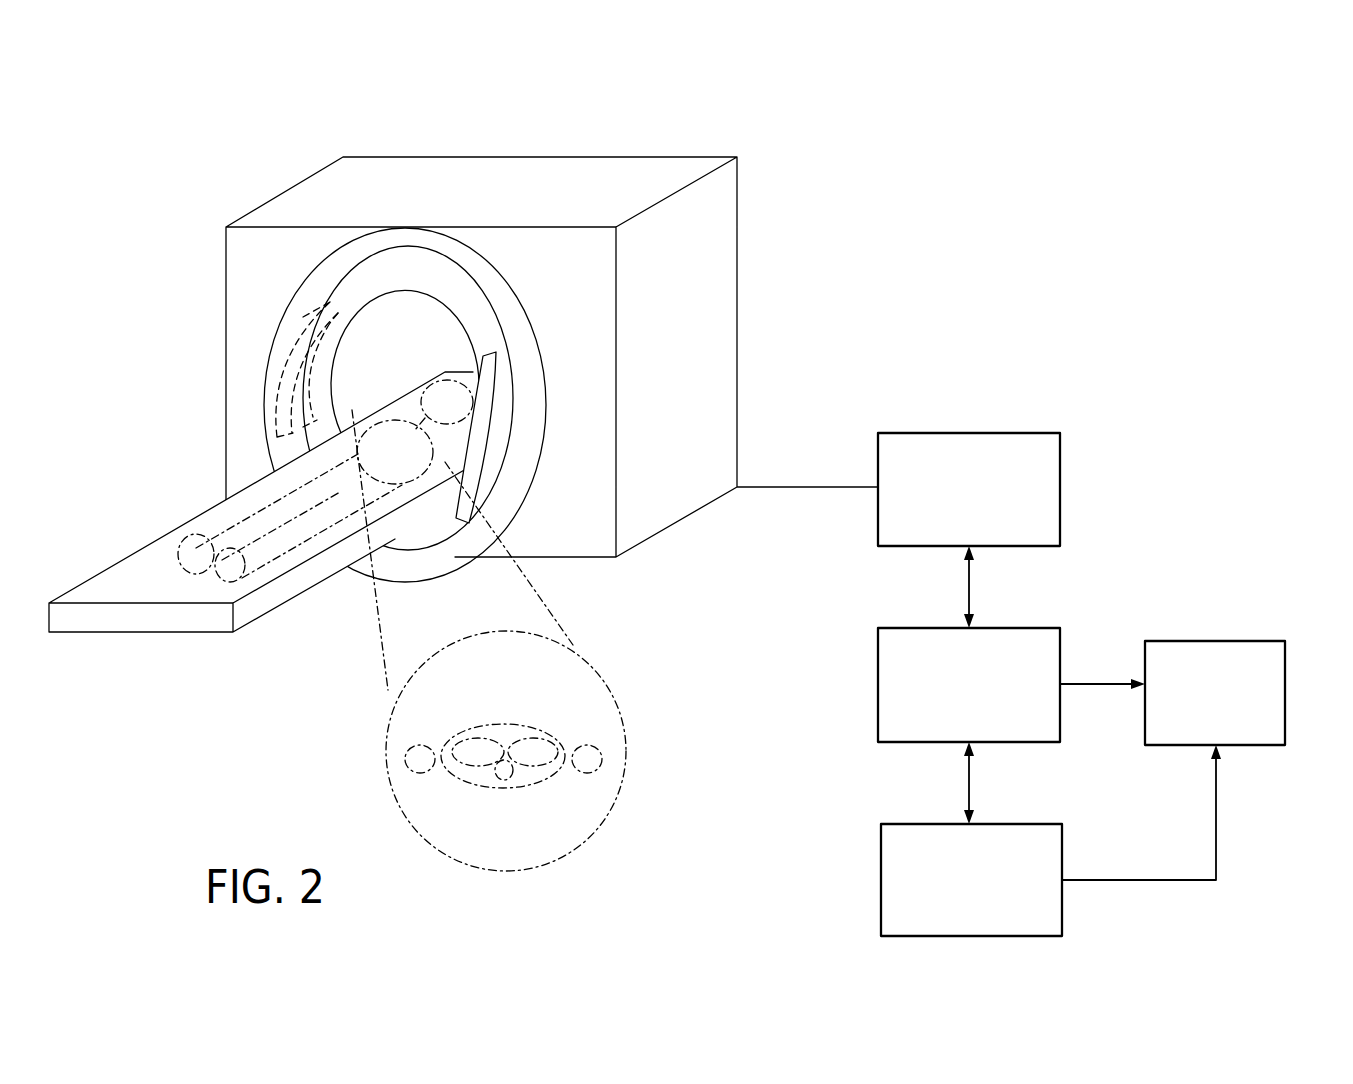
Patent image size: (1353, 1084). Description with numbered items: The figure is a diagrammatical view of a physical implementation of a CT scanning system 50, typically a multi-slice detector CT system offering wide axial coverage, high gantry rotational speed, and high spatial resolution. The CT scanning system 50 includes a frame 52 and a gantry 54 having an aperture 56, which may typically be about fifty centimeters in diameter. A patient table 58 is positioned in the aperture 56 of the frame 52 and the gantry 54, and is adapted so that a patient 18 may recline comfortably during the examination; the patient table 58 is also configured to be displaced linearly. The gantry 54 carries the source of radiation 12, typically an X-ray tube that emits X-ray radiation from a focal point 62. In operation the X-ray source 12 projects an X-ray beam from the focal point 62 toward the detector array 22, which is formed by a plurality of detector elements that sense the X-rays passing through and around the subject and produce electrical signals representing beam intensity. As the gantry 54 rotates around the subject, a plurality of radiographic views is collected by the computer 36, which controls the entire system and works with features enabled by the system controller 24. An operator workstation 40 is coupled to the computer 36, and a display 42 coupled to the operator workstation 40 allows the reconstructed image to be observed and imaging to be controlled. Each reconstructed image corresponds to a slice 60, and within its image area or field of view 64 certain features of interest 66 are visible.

The CT scanning system 50 is at (708, 117).
The frame 52 is at (723, 273).
The gantry 54 is at (380, 260).
The aperture 56 is at (410, 340).
The focal point 62 is at (310, 388).
The source of radiation 12 is at (277, 415).
The detector array 22 is at (497, 423).
The patient 18 is at (223, 527).
The patient table 58 is at (113, 625).
The slice 60 is at (397, 490).
The field of view 64 is at (610, 800).
The features of interest 66 is at (530, 727).
The system controller 24 is at (1060, 470).
The computer 36 is at (878, 658).
The operator workstation 40 is at (881, 863).
The display 42 is at (1287, 670).